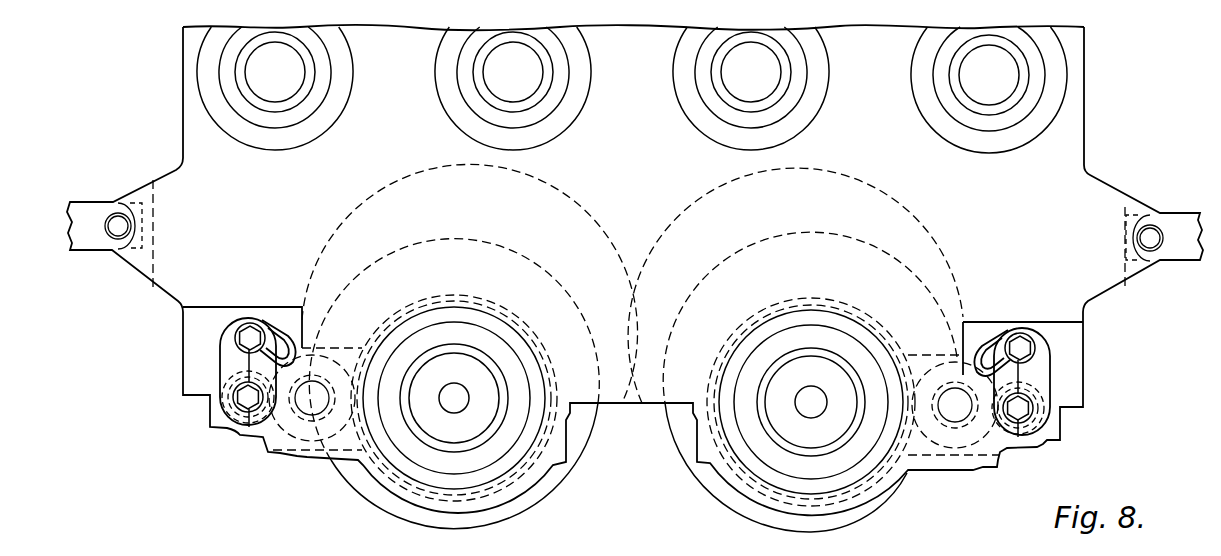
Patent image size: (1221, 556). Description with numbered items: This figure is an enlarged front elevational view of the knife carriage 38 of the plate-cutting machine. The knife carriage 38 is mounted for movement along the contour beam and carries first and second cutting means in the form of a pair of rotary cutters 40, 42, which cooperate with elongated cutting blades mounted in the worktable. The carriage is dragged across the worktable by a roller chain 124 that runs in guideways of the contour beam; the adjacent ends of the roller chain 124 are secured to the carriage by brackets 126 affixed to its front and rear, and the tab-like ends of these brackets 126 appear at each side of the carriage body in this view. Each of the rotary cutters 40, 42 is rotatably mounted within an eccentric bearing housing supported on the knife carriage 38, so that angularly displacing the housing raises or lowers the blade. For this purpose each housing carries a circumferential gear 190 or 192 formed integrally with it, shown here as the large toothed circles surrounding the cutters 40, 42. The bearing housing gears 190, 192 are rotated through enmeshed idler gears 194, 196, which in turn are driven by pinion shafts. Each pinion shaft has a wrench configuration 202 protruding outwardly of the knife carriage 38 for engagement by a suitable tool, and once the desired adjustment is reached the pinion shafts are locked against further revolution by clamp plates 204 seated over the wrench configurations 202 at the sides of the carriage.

The knife carriage 38 is at (1085, 90).
The cutter 40 is at (708, 478).
The cutter 42 is at (384, 502).
The roller chain 124 is at (82, 212).
The brackets 126 is at (157, 182).
The circumferential gear 190 is at (738, 470).
The circumferential gear 192 is at (347, 490).
The idler gear 194 is at (954, 415).
The idler gear 196 is at (277, 423).
The wrench configuration 202 is at (238, 402).
The clamp plates 204 is at (222, 358).